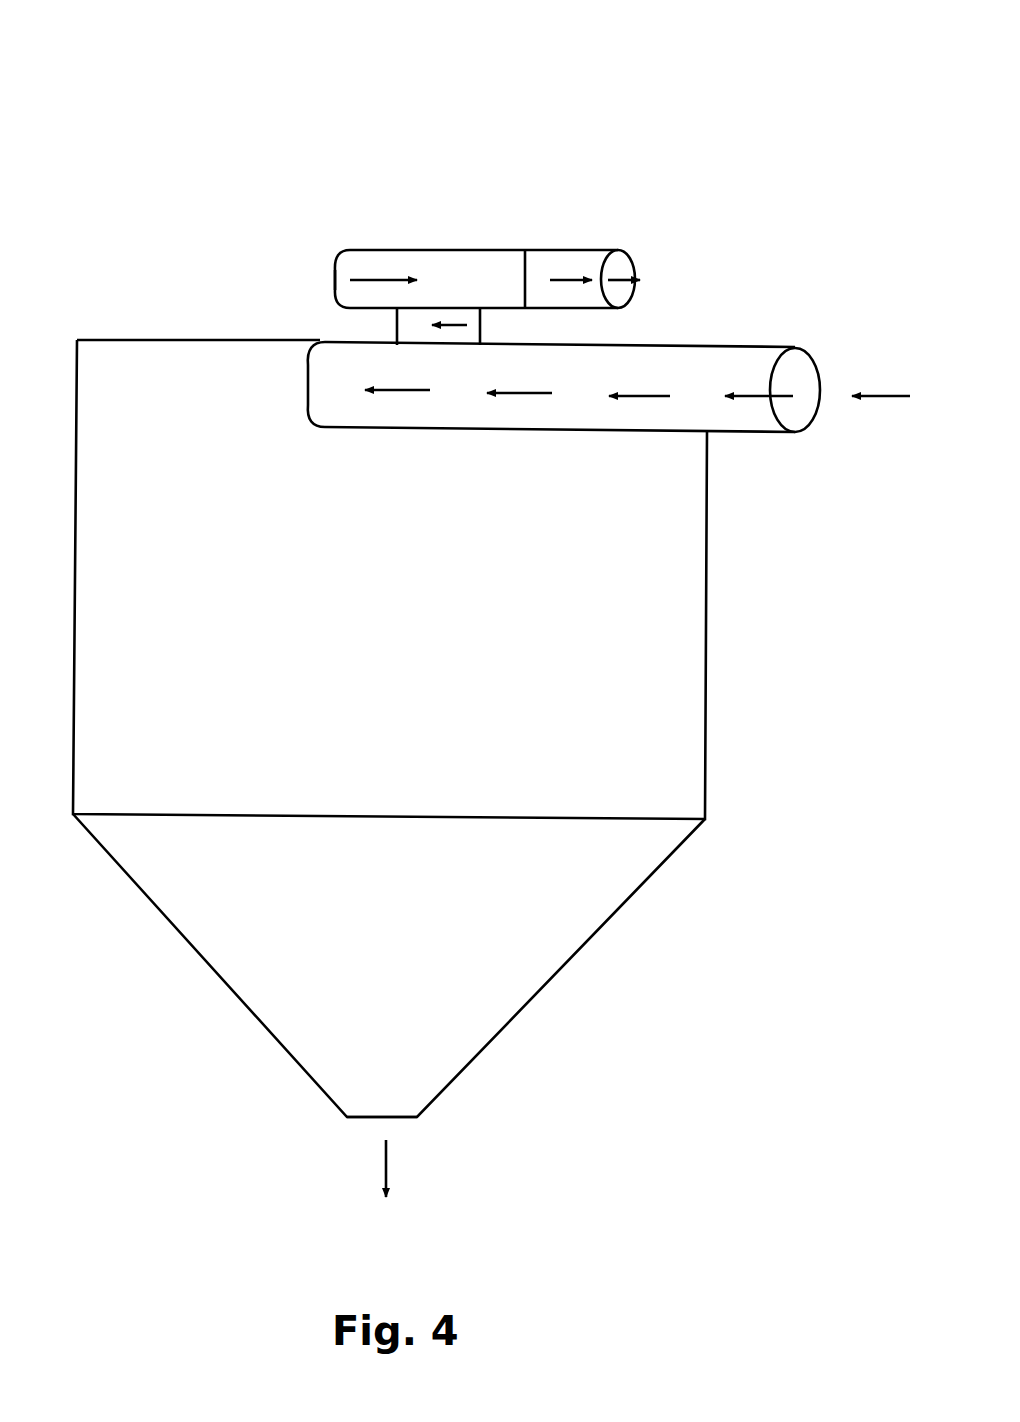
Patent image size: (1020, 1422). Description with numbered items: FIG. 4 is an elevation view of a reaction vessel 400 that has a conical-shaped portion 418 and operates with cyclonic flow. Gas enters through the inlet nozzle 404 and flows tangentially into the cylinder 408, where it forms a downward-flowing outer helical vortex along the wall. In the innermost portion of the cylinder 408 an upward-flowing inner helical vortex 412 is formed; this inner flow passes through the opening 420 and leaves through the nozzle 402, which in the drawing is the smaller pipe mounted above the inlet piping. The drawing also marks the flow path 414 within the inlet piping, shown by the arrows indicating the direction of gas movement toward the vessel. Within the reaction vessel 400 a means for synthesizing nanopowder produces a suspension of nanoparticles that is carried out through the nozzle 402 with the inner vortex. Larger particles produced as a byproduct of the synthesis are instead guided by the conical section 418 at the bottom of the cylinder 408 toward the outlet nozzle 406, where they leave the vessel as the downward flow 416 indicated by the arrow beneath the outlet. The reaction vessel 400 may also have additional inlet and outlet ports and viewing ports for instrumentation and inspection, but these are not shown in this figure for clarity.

The reaction vessel 400 is at (433, 87).
The nozzle 402 is at (573, 252).
The inlet nozzle 404 is at (812, 360).
The outlet nozzle 406 is at (420, 1120).
The cylinder 408 is at (708, 662).
The upward-flowing inner helical vortex 412 is at (390, 280).
The flow path 414 is at (522, 393).
The flow 416 is at (385, 1160).
The conical-shaped portion 418 is at (552, 980).
The opening 420 is at (355, 342).